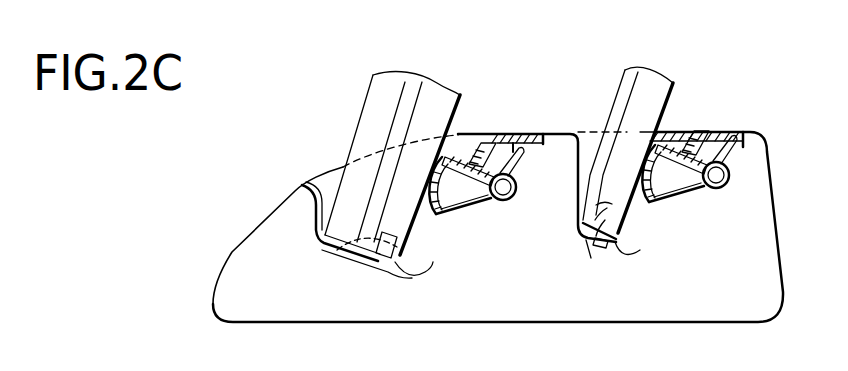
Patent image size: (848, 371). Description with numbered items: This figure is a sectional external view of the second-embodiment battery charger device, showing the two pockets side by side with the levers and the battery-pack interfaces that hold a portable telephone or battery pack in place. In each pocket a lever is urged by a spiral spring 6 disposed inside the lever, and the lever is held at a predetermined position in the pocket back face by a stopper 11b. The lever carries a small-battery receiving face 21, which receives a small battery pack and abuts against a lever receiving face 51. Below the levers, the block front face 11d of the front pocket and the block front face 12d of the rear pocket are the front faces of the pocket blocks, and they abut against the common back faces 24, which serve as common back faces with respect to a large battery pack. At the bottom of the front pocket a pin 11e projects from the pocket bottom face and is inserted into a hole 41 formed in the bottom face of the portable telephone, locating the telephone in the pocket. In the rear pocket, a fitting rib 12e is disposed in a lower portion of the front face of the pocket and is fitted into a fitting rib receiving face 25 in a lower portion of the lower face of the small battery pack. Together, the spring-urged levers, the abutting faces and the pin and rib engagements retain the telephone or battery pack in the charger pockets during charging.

The spiral spring 6 is at (525, 152).
The stopper 11b is at (505, 135).
The block front face 11d is at (425, 278).
The pin 11e is at (377, 272).
The block front face 12d is at (625, 252).
The fitting rib 12e is at (595, 240).
The small-battery receiving face 21 is at (437, 83).
The common back face 24 is at (340, 175).
The fitting rib receiving face 25 is at (607, 208).
The hole 41 is at (337, 250).
The lever receiving face 51 is at (438, 82).